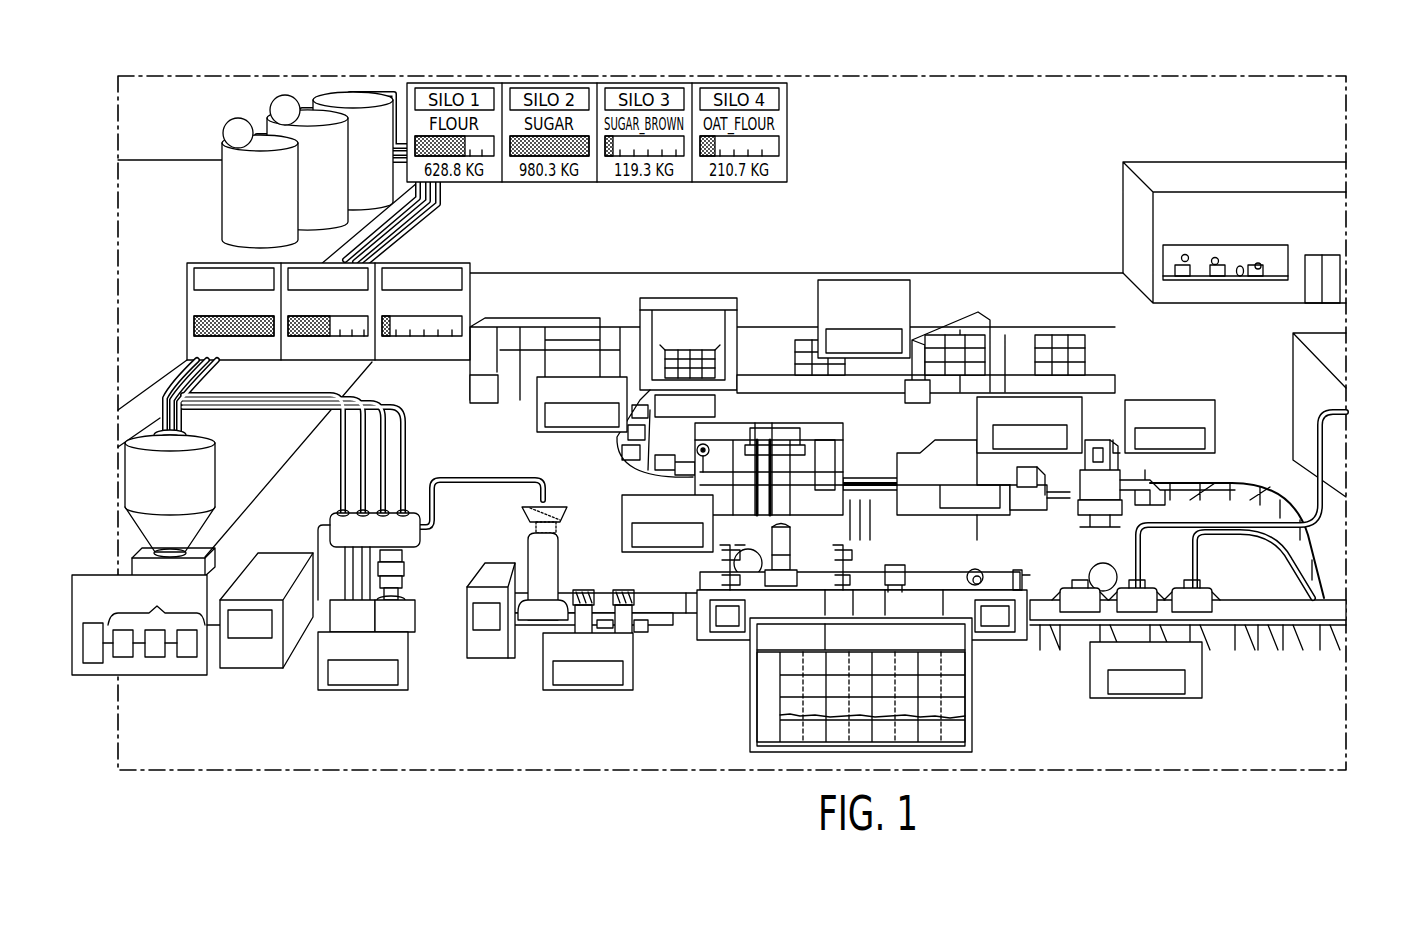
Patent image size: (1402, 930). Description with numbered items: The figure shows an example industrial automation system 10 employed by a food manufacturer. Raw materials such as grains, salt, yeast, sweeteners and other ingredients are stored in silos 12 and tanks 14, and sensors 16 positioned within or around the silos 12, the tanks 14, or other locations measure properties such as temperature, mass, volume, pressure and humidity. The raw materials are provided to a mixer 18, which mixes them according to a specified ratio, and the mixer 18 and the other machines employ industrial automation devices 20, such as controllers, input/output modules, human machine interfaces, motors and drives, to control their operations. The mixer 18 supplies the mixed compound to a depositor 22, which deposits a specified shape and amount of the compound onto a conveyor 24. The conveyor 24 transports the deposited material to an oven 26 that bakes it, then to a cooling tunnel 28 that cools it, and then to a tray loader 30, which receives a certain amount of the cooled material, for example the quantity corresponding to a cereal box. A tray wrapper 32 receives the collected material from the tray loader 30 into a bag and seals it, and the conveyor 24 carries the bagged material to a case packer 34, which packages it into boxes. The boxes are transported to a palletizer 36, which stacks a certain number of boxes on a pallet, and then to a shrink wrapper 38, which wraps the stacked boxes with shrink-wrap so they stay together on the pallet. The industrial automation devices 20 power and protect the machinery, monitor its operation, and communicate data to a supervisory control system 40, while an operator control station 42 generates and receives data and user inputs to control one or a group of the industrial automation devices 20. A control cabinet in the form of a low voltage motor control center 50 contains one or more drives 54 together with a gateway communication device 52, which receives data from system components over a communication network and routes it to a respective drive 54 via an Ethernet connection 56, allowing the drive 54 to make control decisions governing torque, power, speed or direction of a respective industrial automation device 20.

The industrial automation system 10 is at (868, 52).
The silos 12 is at (336, 100).
The tanks 14 is at (181, 315).
The sensors 16 is at (274, 98).
The mixer 18 is at (412, 640).
The industrial automation devices 20 is at (265, 672).
The depositor 22 is at (640, 638).
The conveyor 24 is at (652, 582).
The oven 26 is at (938, 560).
The cooling tunnel 28 is at (1196, 615).
The tray loader 30 is at (1217, 430).
The tray wrapper 32 is at (970, 415).
The case packer 34 is at (614, 517).
The palletizer 36 is at (531, 415).
The shrink wrapper 38 is at (920, 289).
The supervisory control system 40 is at (1236, 262).
The operator control station 42 is at (248, 650).
The low voltage motor control center 50 is at (145, 655).
The gateway communication device 52 is at (92, 664).
The drive 54 is at (154, 654).
The Ethernet connection 56 is at (205, 625).